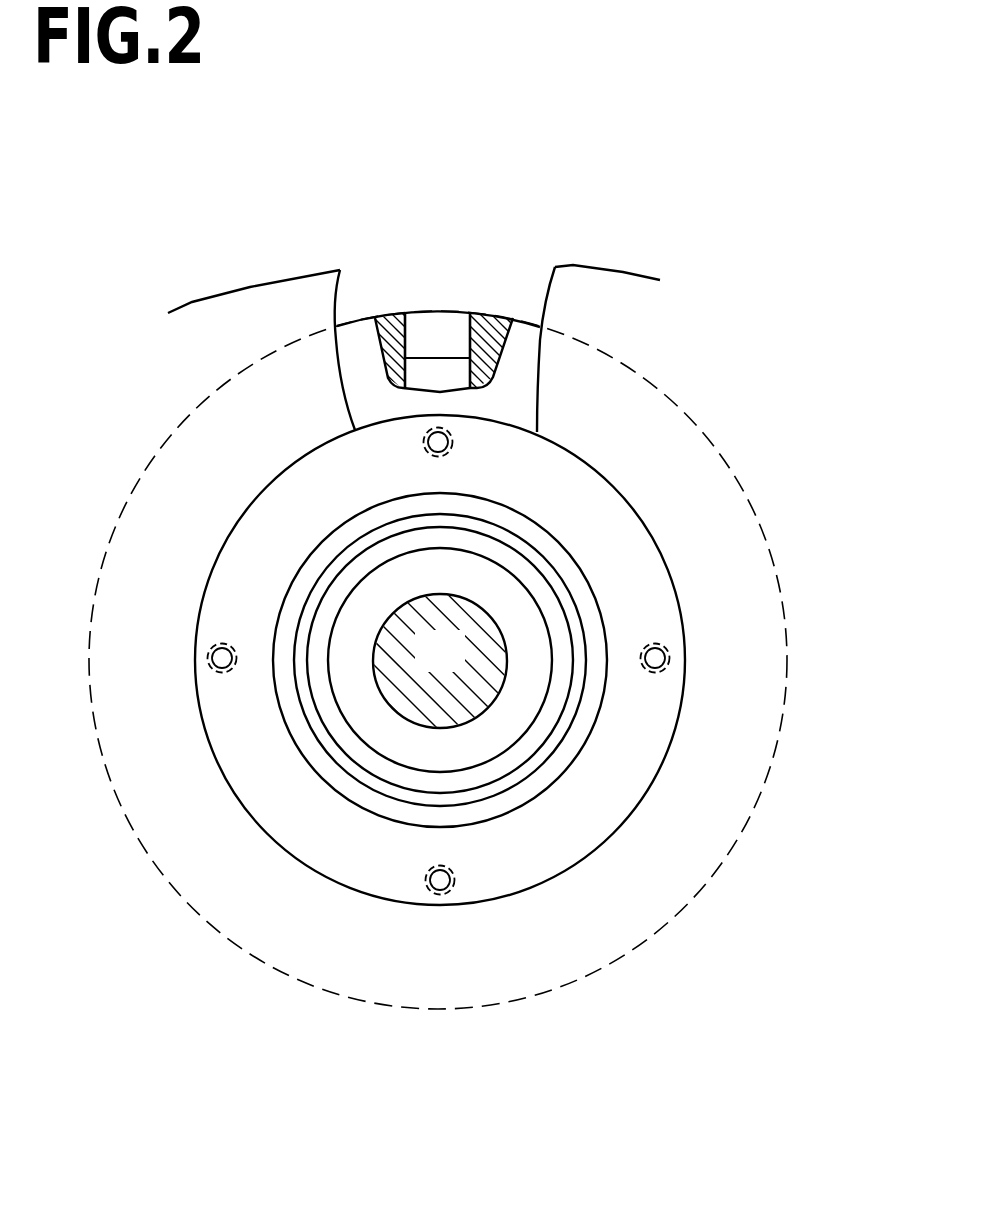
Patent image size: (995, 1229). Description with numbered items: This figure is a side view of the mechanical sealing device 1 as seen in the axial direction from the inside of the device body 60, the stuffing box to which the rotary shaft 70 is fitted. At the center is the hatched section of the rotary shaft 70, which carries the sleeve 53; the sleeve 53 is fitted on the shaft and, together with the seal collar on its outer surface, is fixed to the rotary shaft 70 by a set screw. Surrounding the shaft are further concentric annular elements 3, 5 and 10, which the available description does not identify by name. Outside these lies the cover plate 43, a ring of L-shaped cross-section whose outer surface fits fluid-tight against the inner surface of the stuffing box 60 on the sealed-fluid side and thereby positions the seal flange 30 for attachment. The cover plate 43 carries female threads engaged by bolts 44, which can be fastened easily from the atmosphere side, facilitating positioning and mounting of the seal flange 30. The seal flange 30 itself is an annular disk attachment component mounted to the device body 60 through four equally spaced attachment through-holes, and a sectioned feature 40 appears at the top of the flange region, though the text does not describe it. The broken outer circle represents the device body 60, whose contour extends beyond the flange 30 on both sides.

The mechanical sealing device 1 is at (632, 258).
The inner ring member 3 is at (573, 618).
The outer ring member 5 is at (572, 572).
The intermediate member 10 is at (557, 700).
The seal flange 30 is at (360, 313).
The mounting slot 40 is at (442, 312).
The cover plate 43 is at (552, 472).
The bolts 44 is at (447, 890).
The sleeve 53 is at (497, 728).
The device body 60 is at (230, 323).
The rotary shaft 70 is at (460, 667).